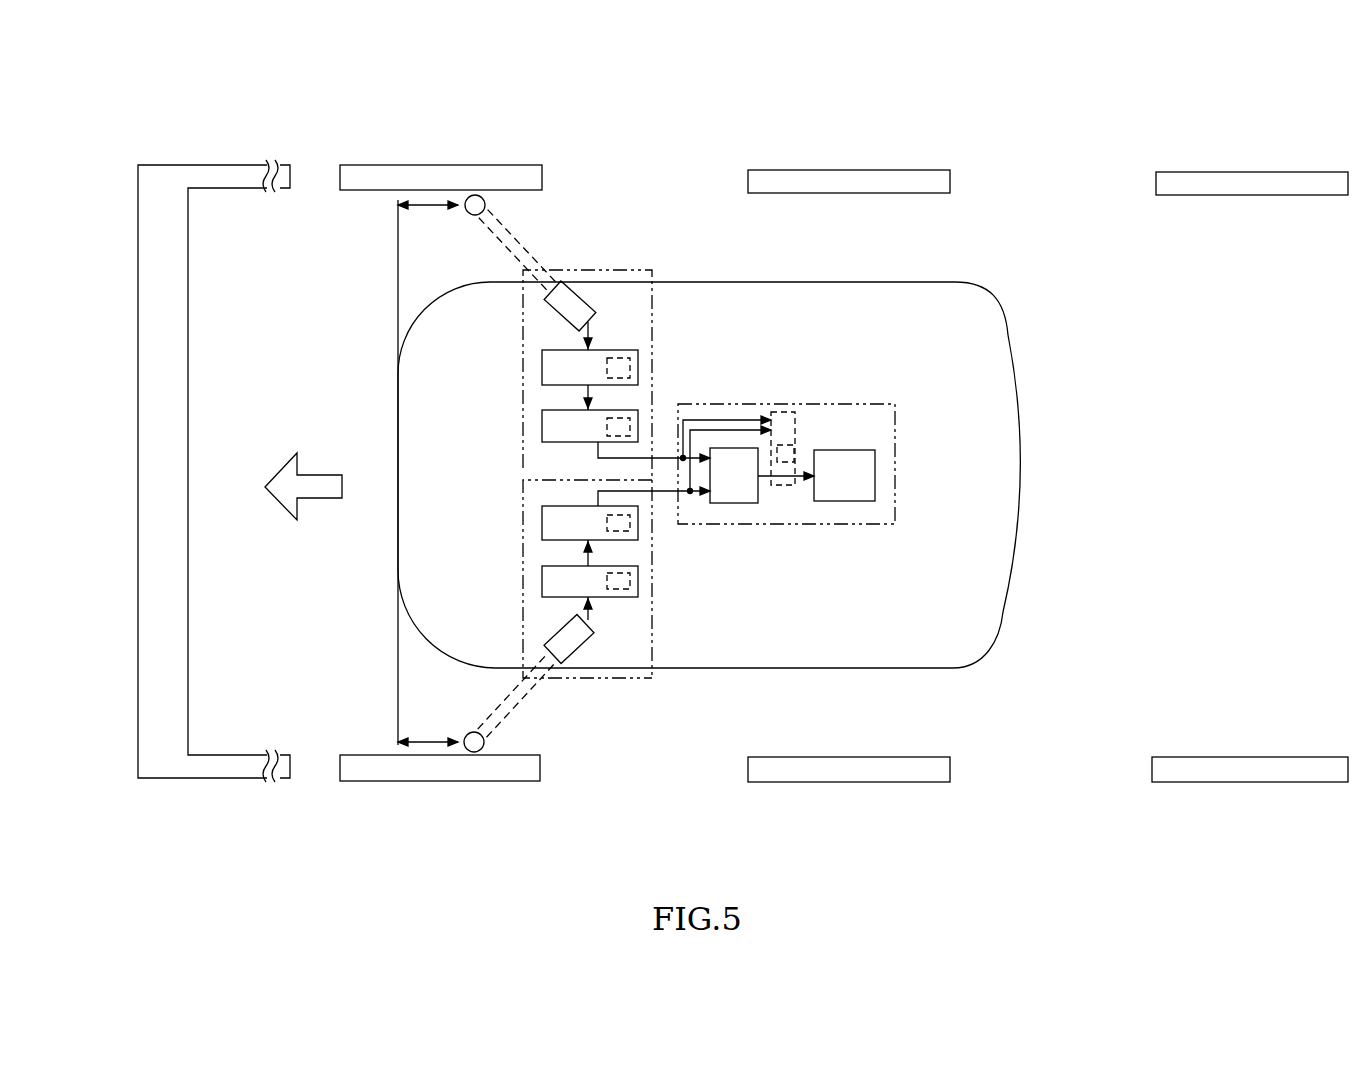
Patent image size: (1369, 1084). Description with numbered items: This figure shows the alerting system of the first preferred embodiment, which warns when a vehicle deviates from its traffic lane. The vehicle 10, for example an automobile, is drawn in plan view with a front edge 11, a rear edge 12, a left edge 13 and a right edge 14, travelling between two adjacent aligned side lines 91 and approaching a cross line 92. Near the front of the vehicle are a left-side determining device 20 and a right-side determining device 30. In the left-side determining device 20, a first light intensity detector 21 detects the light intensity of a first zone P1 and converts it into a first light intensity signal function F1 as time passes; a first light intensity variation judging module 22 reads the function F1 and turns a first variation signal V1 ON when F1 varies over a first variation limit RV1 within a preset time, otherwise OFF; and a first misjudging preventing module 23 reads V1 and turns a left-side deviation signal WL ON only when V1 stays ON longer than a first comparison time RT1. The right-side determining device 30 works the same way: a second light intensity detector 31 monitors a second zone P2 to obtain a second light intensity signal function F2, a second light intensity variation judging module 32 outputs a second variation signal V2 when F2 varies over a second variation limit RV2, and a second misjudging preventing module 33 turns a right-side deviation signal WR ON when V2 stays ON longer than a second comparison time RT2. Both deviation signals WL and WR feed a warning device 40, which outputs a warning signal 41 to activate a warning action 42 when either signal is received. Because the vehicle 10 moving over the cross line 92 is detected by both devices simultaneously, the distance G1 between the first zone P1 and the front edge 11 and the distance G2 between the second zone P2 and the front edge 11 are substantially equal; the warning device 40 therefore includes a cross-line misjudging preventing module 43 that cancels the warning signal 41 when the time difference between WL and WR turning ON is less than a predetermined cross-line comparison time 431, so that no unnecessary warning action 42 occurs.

The vehicle 10 is at (977, 282).
The front edge 11 is at (400, 357).
The rear edge 12 is at (1012, 356).
The left edge 13 is at (725, 668).
The right edge 14 is at (743, 282).
The left-side determining device 20 is at (648, 680).
The first light intensity detector 21 is at (577, 645).
The first light intensity variation judging module 22 is at (542, 580).
The first misjudging preventing module 23 is at (542, 520).
The right-side determining device 30 is at (652, 270).
The second light intensity detector 31 is at (575, 298).
The second light intensity variation judging module 32 is at (542, 368).
The second misjudging preventing module 33 is at (542, 428).
The warning device 40 is at (893, 528).
The warning signal 41 is at (765, 476).
The warning action 42 is at (833, 501).
The cross-line misjudging preventing module 43 is at (785, 411).
The cross-line comparison time 431 is at (795, 445).
The side lines 91 is at (500, 168).
The cross line 92 is at (150, 275).
The first zone P1 is at (478, 752).
The second zone P2 is at (465, 197).
The distance between first zone and front edge G1 is at (428, 727).
The distance between second zone and front edge G2 is at (428, 220).
The first light intensity signal function F1 is at (585, 615).
The second light intensity signal function F2 is at (583, 332).
The first variation signal V1 is at (588, 554).
The second variation signal V2 is at (588, 397).
The right-side deviation signal WR is at (597, 450).
The left-side deviation signal WL is at (597, 497).
The first variation limit RV1 is at (632, 582).
The second variation limit RV2 is at (625, 360).
The first comparison time RT1 is at (632, 523).
The second comparison time RT2 is at (632, 425).